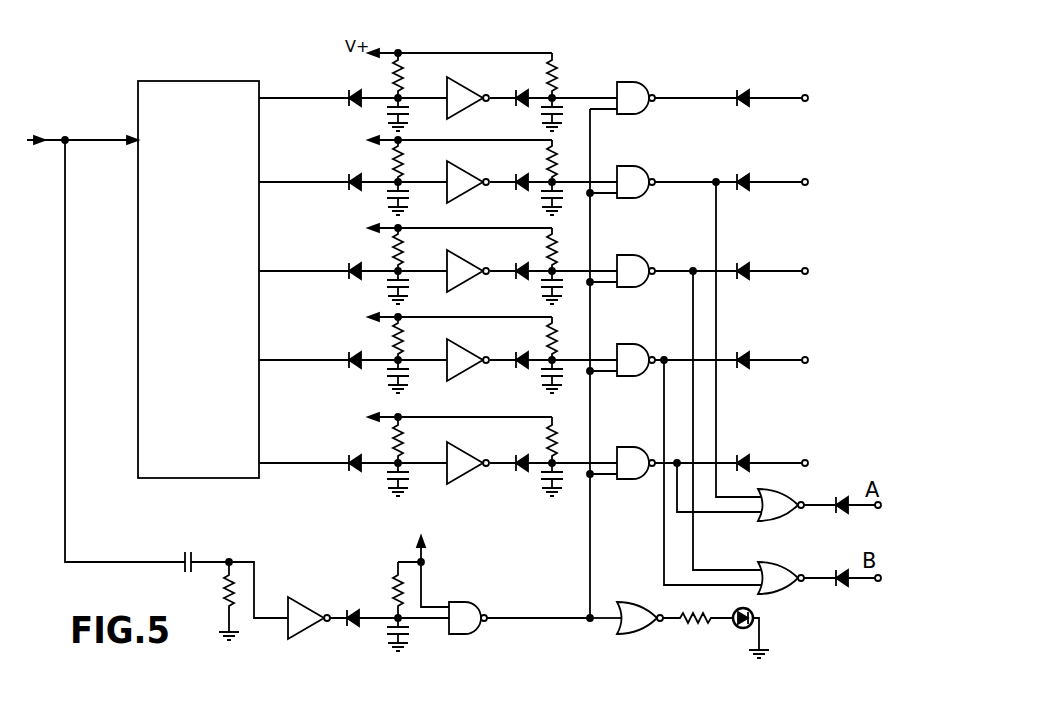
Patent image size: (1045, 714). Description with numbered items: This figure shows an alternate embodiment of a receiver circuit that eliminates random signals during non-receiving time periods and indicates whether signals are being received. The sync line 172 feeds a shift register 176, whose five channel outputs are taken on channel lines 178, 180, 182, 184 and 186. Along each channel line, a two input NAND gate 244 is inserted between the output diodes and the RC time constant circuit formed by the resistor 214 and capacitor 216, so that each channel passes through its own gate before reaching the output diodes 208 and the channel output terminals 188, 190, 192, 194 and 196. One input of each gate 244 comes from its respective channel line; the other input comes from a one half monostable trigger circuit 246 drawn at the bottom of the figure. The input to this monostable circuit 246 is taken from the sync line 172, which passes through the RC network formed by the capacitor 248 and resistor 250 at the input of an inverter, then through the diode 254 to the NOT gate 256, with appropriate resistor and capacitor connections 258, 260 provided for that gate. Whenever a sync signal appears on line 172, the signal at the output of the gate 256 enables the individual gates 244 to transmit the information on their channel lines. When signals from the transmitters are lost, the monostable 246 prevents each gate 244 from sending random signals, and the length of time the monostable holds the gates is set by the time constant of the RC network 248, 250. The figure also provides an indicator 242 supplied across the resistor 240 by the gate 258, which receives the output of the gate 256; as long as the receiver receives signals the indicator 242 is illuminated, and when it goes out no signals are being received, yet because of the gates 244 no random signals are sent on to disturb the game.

The sync line 172 is at (117, 125).
The shift register 176 is at (157, 81).
The channel line 178 is at (325, 88).
The channel line 180 is at (311, 166).
The channel line 182 is at (318, 263).
The channel line 184 is at (315, 353).
The channel line 186 is at (313, 450).
The output terminal 188 is at (808, 98).
The output terminal 190 is at (808, 182).
The output terminal 192 is at (808, 271).
The output terminal 194 is at (808, 360).
The output terminal 196 is at (808, 463).
The output diode 208 is at (743, 106).
The RC time constant circuit resistor 214 is at (556, 74).
The RC time constant circuit capacitor 216 is at (542, 110).
The two input NAND gate 244 is at (640, 82).
The resistor 240 is at (680, 623).
The indicator 242 is at (731, 628).
The one half monostable trigger circuit 246 is at (328, 636).
The RC network capacitor 248 is at (185, 576).
The RC network resistor 250 is at (226, 592).
The diode 254 is at (350, 612).
The NOT gate 256 is at (475, 604).
The gate 258 is at (396, 578).
The capacitor 260 is at (410, 628).